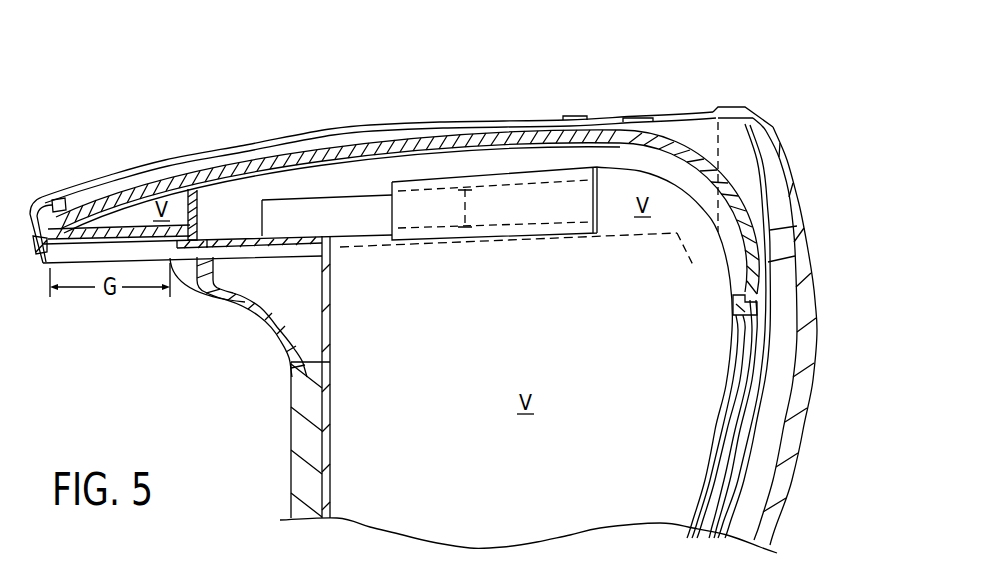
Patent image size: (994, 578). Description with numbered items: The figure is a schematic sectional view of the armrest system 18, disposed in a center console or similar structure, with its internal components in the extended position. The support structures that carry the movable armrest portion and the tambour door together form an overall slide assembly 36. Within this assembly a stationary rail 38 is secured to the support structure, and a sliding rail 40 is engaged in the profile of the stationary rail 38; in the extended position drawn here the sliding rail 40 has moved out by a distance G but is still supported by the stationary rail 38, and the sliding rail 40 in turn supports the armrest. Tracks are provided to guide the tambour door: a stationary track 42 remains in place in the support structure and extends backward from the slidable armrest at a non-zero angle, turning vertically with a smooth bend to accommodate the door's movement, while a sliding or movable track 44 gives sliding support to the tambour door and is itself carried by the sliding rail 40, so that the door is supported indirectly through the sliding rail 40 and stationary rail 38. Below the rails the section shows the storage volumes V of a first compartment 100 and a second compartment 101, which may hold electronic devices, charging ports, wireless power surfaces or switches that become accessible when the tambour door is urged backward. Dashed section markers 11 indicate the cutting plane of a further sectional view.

The armrest system 18 is at (139, 137).
The sliding or movable track 44 is at (433, 142).
The section line of FIG. 11 is at (647, 107).
The slide assembly 36 is at (753, 207).
The stationary rail 38 is at (527, 242).
The sliding rail 40 is at (340, 242).
The stationary track 42 is at (748, 343).
The first compartment 100 is at (205, 200).
The second compartment 101 is at (694, 265).